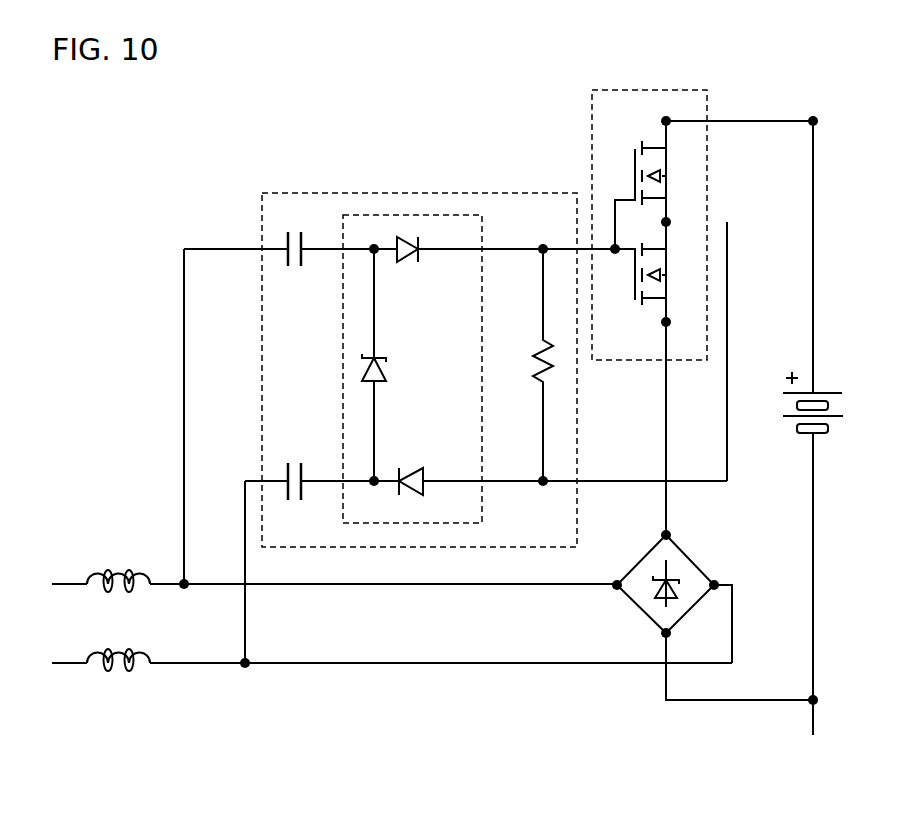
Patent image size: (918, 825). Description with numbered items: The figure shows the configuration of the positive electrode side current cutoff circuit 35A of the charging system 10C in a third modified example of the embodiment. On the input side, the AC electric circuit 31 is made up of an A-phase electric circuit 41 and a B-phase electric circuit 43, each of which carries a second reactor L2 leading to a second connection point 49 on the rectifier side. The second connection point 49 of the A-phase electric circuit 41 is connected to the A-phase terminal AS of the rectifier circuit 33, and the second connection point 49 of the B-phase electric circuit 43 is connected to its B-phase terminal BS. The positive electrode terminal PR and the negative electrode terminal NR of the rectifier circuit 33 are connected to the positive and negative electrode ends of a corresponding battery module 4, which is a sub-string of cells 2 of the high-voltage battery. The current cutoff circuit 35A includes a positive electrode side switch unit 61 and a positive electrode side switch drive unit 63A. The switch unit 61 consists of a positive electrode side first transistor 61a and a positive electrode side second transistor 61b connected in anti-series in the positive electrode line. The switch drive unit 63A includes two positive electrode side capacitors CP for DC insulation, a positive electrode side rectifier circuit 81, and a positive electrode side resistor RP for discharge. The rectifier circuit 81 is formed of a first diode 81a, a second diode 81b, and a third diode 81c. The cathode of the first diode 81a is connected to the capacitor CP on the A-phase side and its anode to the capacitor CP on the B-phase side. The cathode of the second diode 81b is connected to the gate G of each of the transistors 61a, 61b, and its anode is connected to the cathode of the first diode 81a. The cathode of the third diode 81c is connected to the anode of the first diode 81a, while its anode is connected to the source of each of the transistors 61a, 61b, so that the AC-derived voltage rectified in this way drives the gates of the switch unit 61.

The charging system 10C is at (134, 163).
The positive electrode side current cutoff circuit 35A is at (233, 170).
The positive electrode side switch drive unit 63A is at (256, 217).
The positive electrode side rectifier circuit 81 is at (484, 234).
The first diode 81a is at (380, 356).
The second diode 81b is at (420, 258).
The third diode 81c is at (403, 468).
The positive electrode side capacitor CP is at (303, 262).
The positive electrode side resistor RP is at (540, 340).
The positive electrode side switch unit 61 is at (708, 98).
The positive electrode side first transistor 61a is at (634, 157).
The positive electrode side second transistor 61b is at (636, 297).
The gate G is at (613, 245).
The battery module 4 is at (816, 342).
The cell 2 is at (838, 416).
The rectifier circuit 33 is at (702, 558).
The positive electrode terminal PR is at (670, 532).
The A-phase terminal AS is at (618, 582).
The B-phase terminal BS is at (718, 584).
The negative electrode terminal NR is at (663, 633).
The second reactor L2 is at (108, 672).
The second connection point 49 is at (188, 582).
The A-phase electric circuit 41 is at (164, 592).
The B-phase electric circuit 43 is at (216, 671).
The AC electric circuit 31 is at (240, 740).